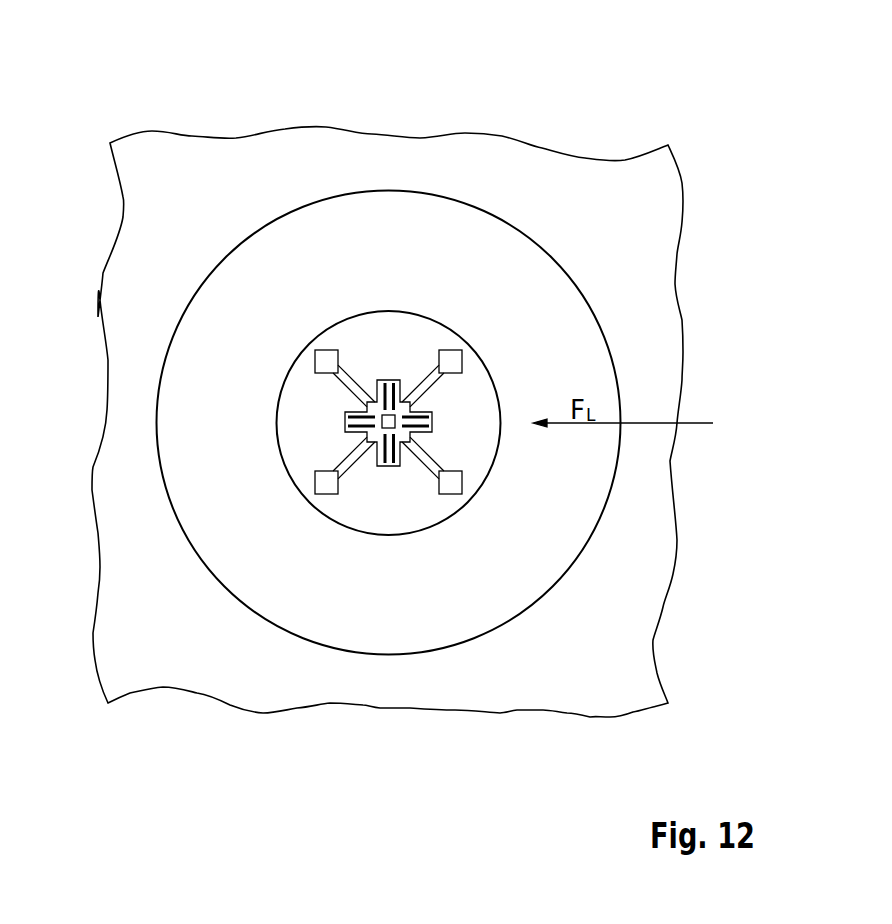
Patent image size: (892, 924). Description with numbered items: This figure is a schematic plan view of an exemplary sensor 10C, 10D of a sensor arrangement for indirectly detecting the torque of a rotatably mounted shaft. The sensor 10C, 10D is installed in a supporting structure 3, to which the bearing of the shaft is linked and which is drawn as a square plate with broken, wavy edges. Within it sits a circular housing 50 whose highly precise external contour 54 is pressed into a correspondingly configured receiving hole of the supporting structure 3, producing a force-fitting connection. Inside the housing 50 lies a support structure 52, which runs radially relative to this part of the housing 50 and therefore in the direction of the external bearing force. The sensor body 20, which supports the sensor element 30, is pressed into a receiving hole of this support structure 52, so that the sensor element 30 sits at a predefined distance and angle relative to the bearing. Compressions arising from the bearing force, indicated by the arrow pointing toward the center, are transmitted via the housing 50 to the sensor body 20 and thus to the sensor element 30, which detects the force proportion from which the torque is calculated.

The sensor 10C is at (408, 368).
The sensor 10D is at (207, 88).
The supporting structure 3 is at (663, 284).
The housing 50 is at (605, 337).
The support structure 52 is at (195, 356).
The external contour 54 is at (146, 400).
The sensor body 20 is at (241, 456).
The sensor element 30 is at (306, 453).